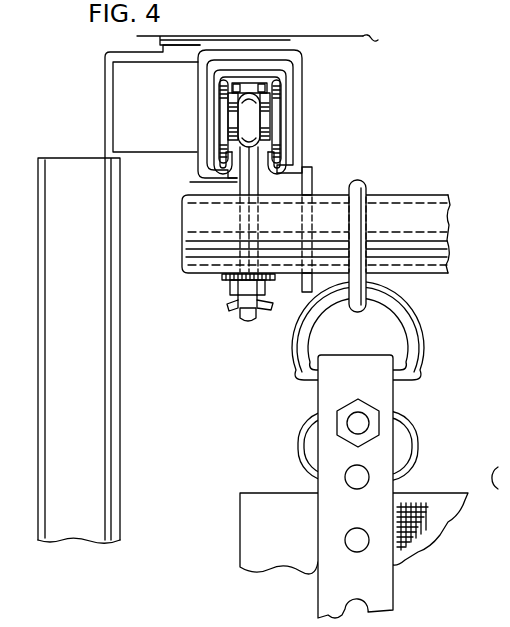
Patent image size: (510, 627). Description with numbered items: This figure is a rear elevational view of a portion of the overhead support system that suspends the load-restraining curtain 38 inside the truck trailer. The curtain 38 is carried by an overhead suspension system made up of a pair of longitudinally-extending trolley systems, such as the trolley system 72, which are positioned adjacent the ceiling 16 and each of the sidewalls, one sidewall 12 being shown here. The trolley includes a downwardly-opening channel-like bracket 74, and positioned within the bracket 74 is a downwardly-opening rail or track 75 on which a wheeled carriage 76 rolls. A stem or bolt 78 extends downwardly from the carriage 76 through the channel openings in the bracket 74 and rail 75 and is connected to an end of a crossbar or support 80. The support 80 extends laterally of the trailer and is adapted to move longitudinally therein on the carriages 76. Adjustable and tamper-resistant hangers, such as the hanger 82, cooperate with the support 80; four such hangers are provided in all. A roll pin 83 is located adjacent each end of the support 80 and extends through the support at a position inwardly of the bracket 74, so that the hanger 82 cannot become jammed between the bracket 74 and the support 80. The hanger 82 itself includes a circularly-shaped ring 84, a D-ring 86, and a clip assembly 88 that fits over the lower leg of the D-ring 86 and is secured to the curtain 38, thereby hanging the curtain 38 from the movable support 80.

The sidewall 12 is at (129, 500).
The top wall or ceiling 16 is at (271, 41).
The curtain 38 is at (292, 539).
The trolley system 72 is at (303, 92).
The channel-like bracket 74 is at (302, 72).
The rail or track 75 is at (263, 68).
The wheeled carriage 76 is at (238, 72).
The stem or bolt 78 is at (240, 182).
The crossbar or support 80 is at (202, 275).
The hanger 82 is at (397, 388).
The roll pin 83 is at (313, 181).
The circularly-shaped ring 84 is at (365, 182).
The D-ring 86 is at (407, 320).
The clip assembly 88 is at (299, 433).